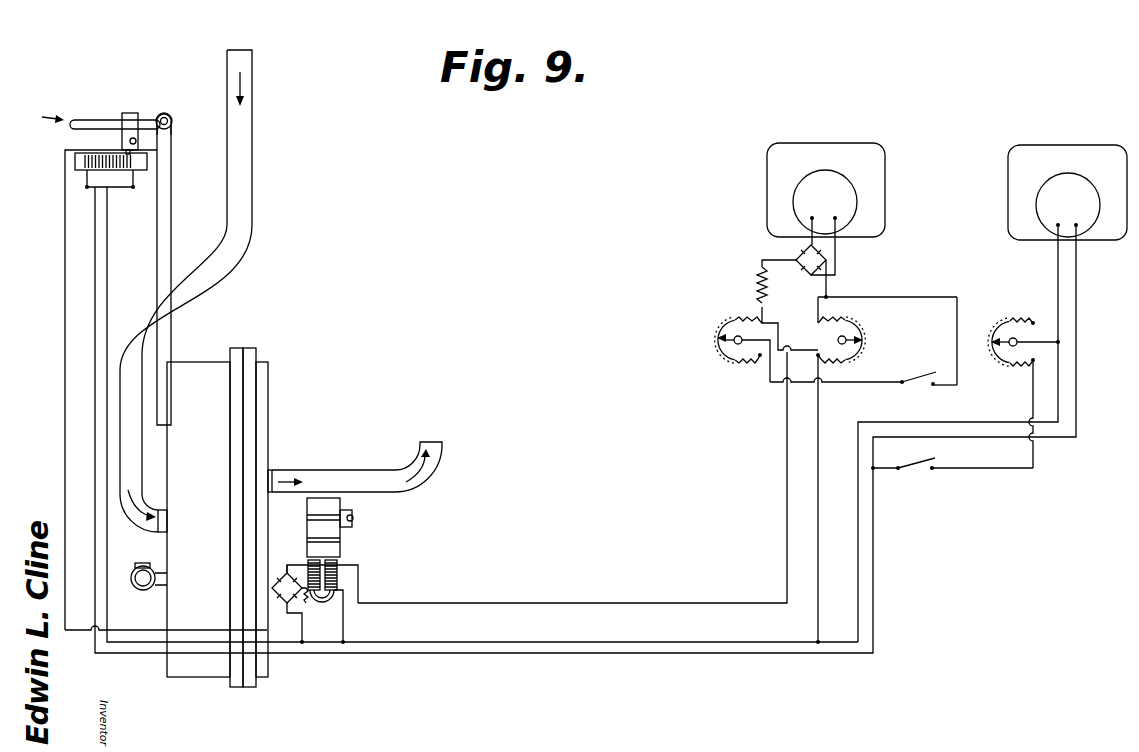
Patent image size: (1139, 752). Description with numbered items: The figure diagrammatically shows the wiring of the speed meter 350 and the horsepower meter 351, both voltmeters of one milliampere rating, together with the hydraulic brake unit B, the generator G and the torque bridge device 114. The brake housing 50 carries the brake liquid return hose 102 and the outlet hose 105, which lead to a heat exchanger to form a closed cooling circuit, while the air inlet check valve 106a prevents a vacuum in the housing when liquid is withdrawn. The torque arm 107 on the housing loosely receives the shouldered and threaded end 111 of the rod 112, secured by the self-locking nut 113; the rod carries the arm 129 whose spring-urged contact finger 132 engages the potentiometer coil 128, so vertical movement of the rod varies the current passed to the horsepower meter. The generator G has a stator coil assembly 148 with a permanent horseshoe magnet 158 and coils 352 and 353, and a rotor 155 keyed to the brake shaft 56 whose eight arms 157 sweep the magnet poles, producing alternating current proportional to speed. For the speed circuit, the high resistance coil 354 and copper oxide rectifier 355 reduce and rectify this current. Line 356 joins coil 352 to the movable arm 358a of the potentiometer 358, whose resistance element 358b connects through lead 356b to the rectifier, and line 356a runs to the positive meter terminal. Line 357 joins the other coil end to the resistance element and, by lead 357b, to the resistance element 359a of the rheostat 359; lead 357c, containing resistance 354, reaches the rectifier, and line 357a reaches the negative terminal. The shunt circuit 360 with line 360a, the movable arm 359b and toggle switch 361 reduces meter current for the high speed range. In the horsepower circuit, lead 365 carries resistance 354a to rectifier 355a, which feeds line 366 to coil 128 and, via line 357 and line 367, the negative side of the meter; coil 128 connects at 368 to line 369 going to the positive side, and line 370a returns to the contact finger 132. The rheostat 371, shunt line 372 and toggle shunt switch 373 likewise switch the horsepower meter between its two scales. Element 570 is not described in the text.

The housing 50 is at (204, 360).
The brake shaft 56 is at (352, 517).
The brake liquid return hose 102 is at (247, 181).
The outlet hose 105 is at (443, 445).
The air inlet check valve 106a is at (146, 565).
The torque arm 107 is at (171, 213).
The shouldered and threaded end 111 is at (172, 120).
The rod 112 is at (93, 119).
The self-locking nut 113 is at (166, 112).
The torque bridge device 114 is at (39, 117).
The potentiometer coil 128 is at (148, 162).
The arm 129 is at (131, 112).
The contact finger 132 is at (132, 152).
The generator stator coil assembly 148 is at (341, 588).
The generator rotor 155 is at (325, 508).
The arms 157 is at (340, 539).
The permanent horseshoe magnet 158 is at (346, 604).
The speed meter 350 is at (886, 186).
The horsepower meter 351 is at (1010, 222).
The coil 352 is at (338, 565).
The coil 353 is at (308, 565).
The high resistance coil 354 is at (761, 286).
The high resistance coil 354a is at (307, 606).
The copper oxide rectifier 355 is at (806, 272).
The copper oxide rectifier 355a is at (273, 598).
The line 356 is at (638, 603).
The line 356a is at (836, 246).
The lead 356b is at (828, 293).
The line 357 is at (572, 642).
The line 357a is at (810, 240).
The lead 357b is at (785, 384).
The lead 357c is at (762, 260).
The potentiometer 358 is at (865, 330).
The movable arm 358a is at (851, 360).
The resistance element 358b is at (862, 298).
The rheostat 359 is at (721, 352).
The resistance element 359a is at (730, 320).
The movable arm 359b is at (734, 362).
The shunt circuit 360 is at (957, 384).
The line 360a is at (957, 301).
The toggle switch 361 is at (915, 378).
The lead 365 is at (290, 612).
The line 366 is at (127, 190).
The line 367 is at (858, 598).
The connection 368 is at (110, 179).
The line 369 is at (95, 312).
The line 370a is at (65, 157).
The rheostat 371 is at (1011, 320).
The shunt line 372 is at (1018, 470).
The toggle shunt switch 373 is at (913, 470).
The wire 570 is at (286, 569).
The brake unit B is at (269, 376).
The generator G is at (305, 507).